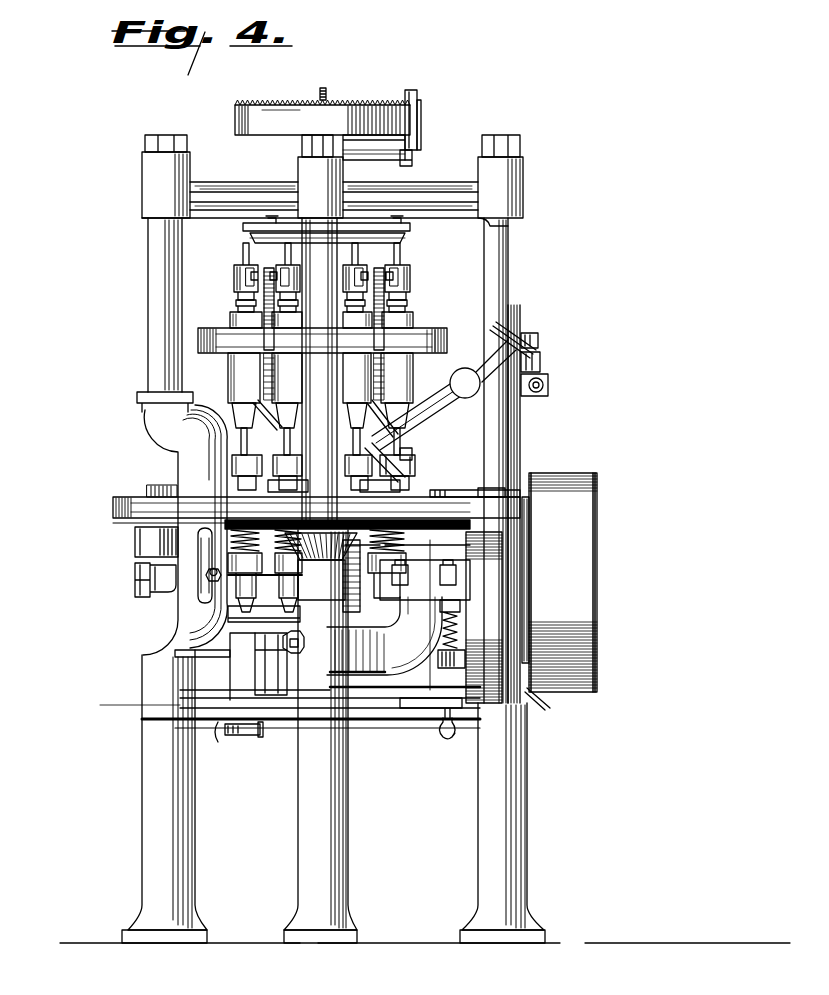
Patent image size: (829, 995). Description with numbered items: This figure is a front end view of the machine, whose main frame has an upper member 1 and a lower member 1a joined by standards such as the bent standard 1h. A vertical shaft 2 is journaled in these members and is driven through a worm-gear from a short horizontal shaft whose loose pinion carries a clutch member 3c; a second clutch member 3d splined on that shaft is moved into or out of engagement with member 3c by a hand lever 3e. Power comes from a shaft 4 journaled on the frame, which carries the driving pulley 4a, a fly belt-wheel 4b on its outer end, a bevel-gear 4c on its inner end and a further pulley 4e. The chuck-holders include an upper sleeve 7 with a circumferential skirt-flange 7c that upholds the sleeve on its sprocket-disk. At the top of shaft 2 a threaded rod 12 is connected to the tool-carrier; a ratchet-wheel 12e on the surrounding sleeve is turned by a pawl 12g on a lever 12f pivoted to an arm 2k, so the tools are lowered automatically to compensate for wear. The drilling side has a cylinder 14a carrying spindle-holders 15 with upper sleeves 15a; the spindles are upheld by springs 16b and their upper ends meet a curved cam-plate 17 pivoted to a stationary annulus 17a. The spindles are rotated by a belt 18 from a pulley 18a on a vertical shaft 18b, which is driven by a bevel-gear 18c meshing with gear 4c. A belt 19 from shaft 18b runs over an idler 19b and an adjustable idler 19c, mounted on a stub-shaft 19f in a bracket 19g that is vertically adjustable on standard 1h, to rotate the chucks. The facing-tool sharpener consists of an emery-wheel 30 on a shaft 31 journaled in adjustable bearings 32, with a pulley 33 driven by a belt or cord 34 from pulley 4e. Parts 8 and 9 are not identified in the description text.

The upper member of the main frame 1 is at (213, 184).
The lower member of the main frame 1a is at (230, 728).
The standard 1h is at (197, 620).
The vertical shaft 2 is at (330, 130).
The arm 2k is at (386, 142).
The clutch member 3c is at (458, 654).
The clutch member 3d is at (453, 666).
The lever 3e is at (445, 737).
The shaft 4 is at (530, 593).
The pulley 4a is at (492, 556).
The fly belt-wheel 4b is at (583, 591).
The bevel-gear 4c is at (333, 633).
The pulley 4e is at (540, 694).
The upper sleeve 7 is at (420, 493).
The circumferential flange 7c is at (420, 478).
The lever 8 is at (425, 441).
The elbow pipe 9 is at (285, 618).
The threaded rod 12 is at (326, 96).
The ratchet-wheel 12e is at (302, 106).
The lever 12f is at (420, 124).
The pawl 12g is at (412, 95).
The cylinder 14a is at (420, 335).
The spindle-holder 15 is at (263, 283).
The upper sleeve 15a is at (243, 276).
The spring 16b is at (240, 311).
The curved cam-plate 17 is at (408, 243).
The stationary annulus 17a is at (405, 232).
The belt 18 is at (198, 344).
The pulley 18a is at (450, 333).
The vertical shaft 18b is at (300, 379).
The bevel-gear 18c is at (322, 572).
The belt 19 is at (140, 513).
The idler 19b is at (478, 500).
The adjustable idler 19c is at (135, 541).
The stub-shaft 19f is at (160, 486).
The bracket 19g is at (140, 589).
The emery-wheel 30 is at (418, 463).
The shaft 31 is at (541, 340).
The adjustable bearings 32 is at (549, 386).
The pulley 33 is at (540, 358).
The belt or cord 34 is at (523, 421).